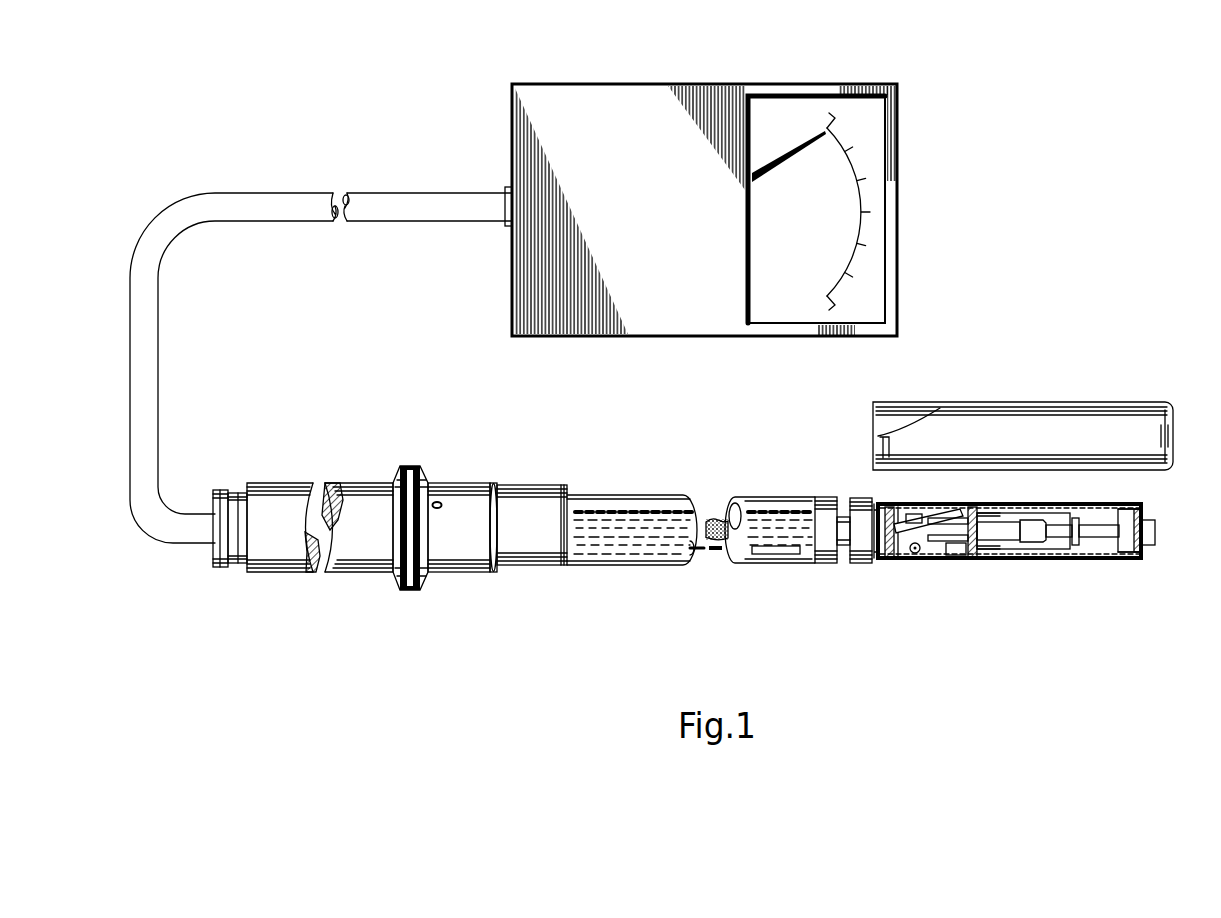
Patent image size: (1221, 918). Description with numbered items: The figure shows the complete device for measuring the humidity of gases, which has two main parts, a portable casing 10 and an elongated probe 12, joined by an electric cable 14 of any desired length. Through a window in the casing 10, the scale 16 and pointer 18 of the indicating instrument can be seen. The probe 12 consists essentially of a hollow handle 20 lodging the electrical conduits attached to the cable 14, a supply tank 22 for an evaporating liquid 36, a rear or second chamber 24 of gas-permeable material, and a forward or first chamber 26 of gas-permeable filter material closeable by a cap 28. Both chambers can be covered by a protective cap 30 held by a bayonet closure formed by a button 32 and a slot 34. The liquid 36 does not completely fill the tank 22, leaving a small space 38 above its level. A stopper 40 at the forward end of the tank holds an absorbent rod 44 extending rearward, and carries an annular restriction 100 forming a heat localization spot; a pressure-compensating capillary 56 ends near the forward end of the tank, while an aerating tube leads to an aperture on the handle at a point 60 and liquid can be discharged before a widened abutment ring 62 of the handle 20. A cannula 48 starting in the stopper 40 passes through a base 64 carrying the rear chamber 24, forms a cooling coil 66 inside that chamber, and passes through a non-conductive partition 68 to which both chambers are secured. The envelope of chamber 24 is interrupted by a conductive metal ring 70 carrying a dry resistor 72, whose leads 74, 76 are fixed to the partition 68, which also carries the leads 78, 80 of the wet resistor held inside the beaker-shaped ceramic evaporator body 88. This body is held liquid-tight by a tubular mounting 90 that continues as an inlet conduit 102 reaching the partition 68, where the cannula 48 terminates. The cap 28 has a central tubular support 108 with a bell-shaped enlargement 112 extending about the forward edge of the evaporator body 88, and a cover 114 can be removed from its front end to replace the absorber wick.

The portable casing 10 is at (888, 237).
The probe 12 is at (529, 567).
The electric cable 14 is at (412, 214).
The scale 16 is at (860, 188).
The pointer 18 is at (833, 129).
The handle 20 is at (452, 573).
The supply tank 22 is at (596, 567).
The rear or second chamber 24 is at (934, 560).
The forward or first chamber 26 is at (1035, 560).
The cap 28 is at (1136, 560).
The protective cap 30 is at (965, 402).
The button 32 is at (884, 560).
The slot 34 is at (877, 438).
The evaporating liquid 36 is at (597, 510).
The small space 38 is at (638, 506).
The stopper 40 is at (817, 565).
The absorbent rod 44 is at (713, 519).
The cannula 48 is at (902, 522).
The pressure-compensating capillary 56 is at (714, 552).
The aperture point 60 is at (438, 503).
The widened abutment ring 62 is at (398, 586).
The base 64 is at (873, 562).
The cooling coil 66 is at (966, 514).
The partition 68 is at (975, 560).
The ring 70 is at (918, 514).
The dry resistor 72 is at (914, 556).
The lead 74 is at (940, 518).
The lead 76 is at (948, 550).
The lead 78 is at (1022, 514).
The lead 80 is at (1022, 546).
The evaporator body 88 is at (1062, 546).
The tubular mounting 90 is at (1048, 528).
The annular restriction 100 is at (848, 546).
The inlet conduit 102 is at (996, 548).
The tubular support 108 is at (1108, 550).
The bell-shaped enlargement 112 is at (1094, 517).
The cover 114 is at (1150, 520).